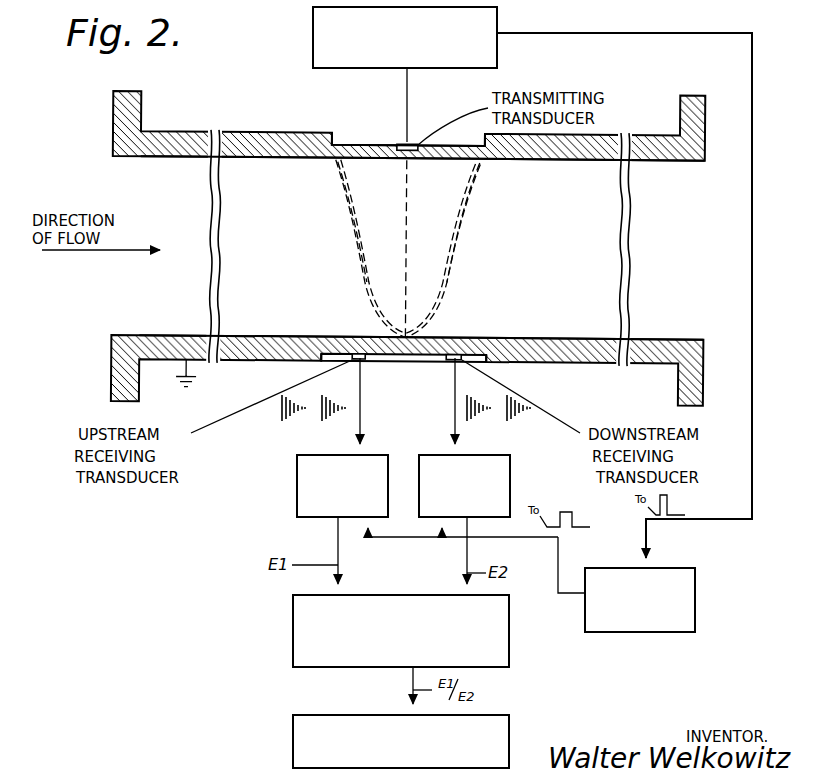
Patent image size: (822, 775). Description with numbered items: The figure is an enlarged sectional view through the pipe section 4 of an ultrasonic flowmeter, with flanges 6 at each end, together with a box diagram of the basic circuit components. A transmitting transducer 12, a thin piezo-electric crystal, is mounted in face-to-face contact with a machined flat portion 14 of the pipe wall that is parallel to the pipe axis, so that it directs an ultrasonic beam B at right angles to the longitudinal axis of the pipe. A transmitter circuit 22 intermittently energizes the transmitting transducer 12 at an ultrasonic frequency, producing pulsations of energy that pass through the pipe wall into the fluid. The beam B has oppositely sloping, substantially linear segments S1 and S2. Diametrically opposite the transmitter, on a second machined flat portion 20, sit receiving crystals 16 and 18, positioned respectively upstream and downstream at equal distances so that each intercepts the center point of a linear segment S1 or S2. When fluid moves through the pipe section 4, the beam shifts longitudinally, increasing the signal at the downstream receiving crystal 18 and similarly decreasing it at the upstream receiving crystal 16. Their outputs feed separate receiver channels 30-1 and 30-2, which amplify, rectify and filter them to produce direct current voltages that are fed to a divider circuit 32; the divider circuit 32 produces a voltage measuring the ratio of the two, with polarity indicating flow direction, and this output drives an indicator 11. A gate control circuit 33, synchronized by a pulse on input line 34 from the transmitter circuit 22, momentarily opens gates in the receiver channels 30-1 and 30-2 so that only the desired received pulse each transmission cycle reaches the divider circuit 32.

The pipe section 4 is at (236, 130).
The pipe flanges 6 is at (135, 92).
The indicator 11 is at (305, 741).
The transmitting transducer 12 is at (405, 140).
The machined flat portion 14 is at (375, 141).
The upstream receiving crystal 16 is at (364, 359).
The downstream receiving crystal 18 is at (452, 359).
The machined flat portion 20 is at (328, 355).
The transmitter circuit 22 is at (313, 38).
The receiver channel 30-1 is at (297, 508).
The receiver channel 30-2 is at (510, 485).
The divider circuit 32 is at (398, 595).
The gate control circuit 33 is at (695, 598).
The input line 34 is at (752, 447).
The ultrasonic beam B is at (355, 212).
The beam segment S1 is at (364, 272).
The beam segment S2 is at (457, 237).